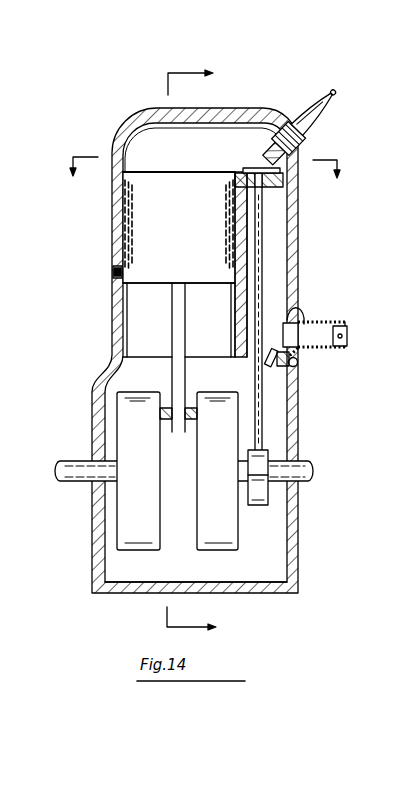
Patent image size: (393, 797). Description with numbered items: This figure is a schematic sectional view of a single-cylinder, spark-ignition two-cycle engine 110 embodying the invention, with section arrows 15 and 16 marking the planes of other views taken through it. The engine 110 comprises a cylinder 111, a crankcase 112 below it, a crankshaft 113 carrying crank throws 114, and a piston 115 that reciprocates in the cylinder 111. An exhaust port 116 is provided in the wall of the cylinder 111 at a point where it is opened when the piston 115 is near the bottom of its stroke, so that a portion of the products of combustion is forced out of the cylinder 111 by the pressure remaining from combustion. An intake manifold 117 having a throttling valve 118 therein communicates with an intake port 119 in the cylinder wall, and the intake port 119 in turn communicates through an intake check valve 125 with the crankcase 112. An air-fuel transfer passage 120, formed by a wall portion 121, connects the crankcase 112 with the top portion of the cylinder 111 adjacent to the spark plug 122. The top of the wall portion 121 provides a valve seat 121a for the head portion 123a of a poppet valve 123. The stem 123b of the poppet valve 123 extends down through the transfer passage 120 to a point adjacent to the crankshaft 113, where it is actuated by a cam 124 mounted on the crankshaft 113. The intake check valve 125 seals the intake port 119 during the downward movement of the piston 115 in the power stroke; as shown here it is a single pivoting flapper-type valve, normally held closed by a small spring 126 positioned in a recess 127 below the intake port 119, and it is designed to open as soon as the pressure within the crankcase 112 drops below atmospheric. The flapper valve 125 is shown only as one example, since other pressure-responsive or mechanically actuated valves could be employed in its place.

The two-cycle engine 110 is at (108, 296).
The cylinder 111 is at (142, 337).
The crankcase 112 is at (158, 562).
The crankshaft 113 is at (285, 477).
The crank throws 114 is at (128, 422).
The piston 115 is at (135, 222).
The exhaust port 116 is at (114, 269).
The intake manifold 117 is at (320, 332).
The throttling valve 118 is at (348, 337).
The intake port 119 is at (293, 330).
The air-fuel transfer passage 120 is at (278, 220).
The wall portion 121 is at (240, 253).
The valve seat 121a is at (235, 173).
The spark plug 122 is at (333, 92).
The poppet valve 123 is at (263, 188).
The head portion 123a is at (262, 171).
The stem 123b is at (263, 282).
The cam 124 is at (260, 460).
The intake check valve 125 is at (305, 353).
The spring 126 is at (294, 368).
The recess 127 is at (297, 367).
The section line 15 is at (202, 352).
The section line 16 is at (206, 178).